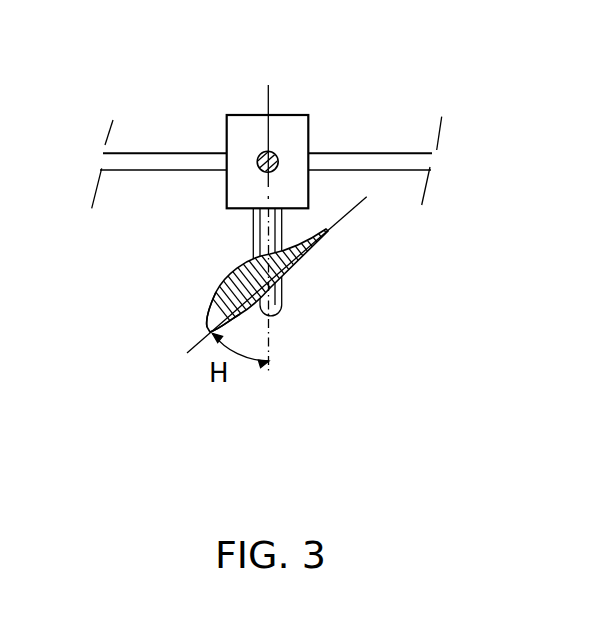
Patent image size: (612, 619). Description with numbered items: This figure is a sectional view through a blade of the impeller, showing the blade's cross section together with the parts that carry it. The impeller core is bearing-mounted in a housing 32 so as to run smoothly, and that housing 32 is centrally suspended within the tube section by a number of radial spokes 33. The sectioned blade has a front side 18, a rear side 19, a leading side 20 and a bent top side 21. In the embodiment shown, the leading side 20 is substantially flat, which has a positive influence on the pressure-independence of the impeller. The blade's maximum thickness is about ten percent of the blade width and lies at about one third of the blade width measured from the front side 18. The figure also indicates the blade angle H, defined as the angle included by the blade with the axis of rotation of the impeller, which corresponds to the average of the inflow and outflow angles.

The front side 18 is at (190, 328).
The rear side 19 is at (348, 234).
The leading side 20 is at (269, 403).
The bent top side 21 is at (195, 283).
The housing 32 is at (275, 125).
The radial spokes 33 is at (137, 162).